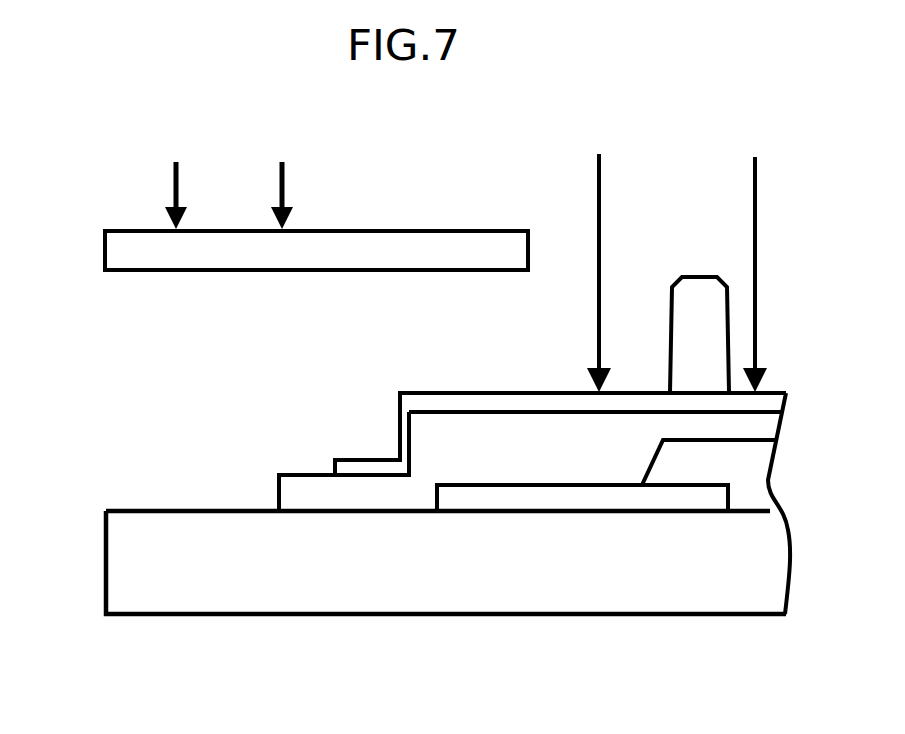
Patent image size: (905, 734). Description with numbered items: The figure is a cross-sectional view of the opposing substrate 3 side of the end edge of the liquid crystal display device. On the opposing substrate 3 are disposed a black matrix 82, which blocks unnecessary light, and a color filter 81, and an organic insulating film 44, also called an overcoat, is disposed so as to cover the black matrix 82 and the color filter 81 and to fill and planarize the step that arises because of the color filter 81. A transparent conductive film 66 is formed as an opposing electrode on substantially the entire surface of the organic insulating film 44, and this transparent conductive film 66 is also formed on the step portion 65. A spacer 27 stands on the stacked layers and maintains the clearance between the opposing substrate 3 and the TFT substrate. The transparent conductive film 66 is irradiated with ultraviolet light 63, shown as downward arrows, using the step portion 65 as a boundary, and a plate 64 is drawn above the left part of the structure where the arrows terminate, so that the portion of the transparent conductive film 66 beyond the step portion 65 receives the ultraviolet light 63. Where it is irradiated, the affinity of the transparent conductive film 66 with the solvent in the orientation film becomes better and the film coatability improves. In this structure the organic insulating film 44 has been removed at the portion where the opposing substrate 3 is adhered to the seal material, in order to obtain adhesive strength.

The opposing substrate 3 is at (140, 550).
The spacer 27 is at (708, 302).
The organic insulating film 44 is at (493, 442).
The ultraviolet light 63 is at (598, 200).
The light shielding mask 64 is at (210, 245).
The step portion 65 is at (407, 438).
The transparent conductive film 66 is at (478, 405).
The color filter 81 is at (733, 470).
The black matrix 82 is at (575, 493).